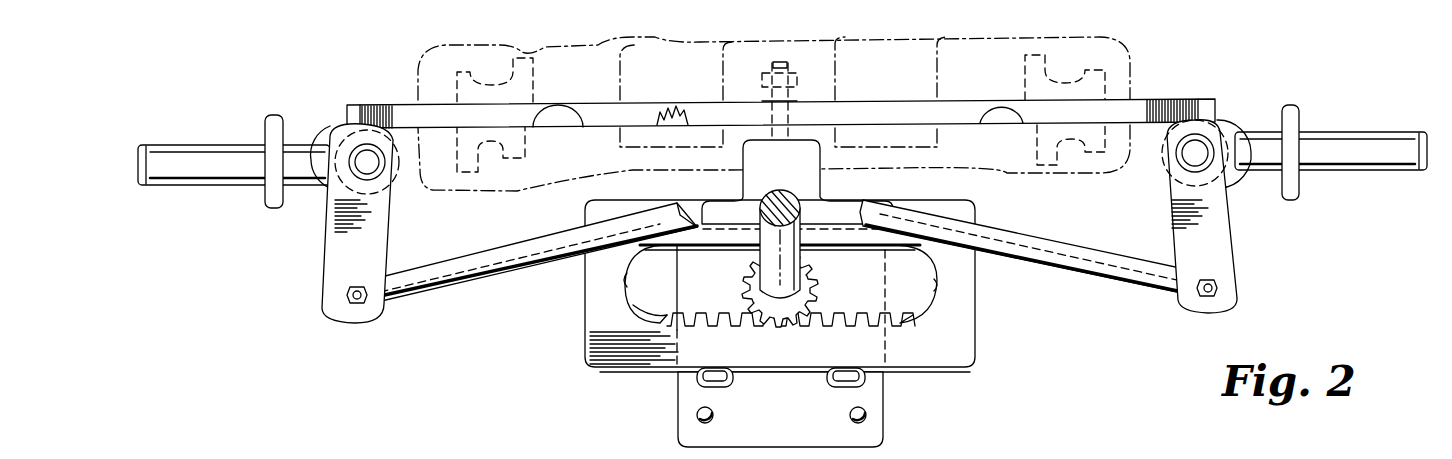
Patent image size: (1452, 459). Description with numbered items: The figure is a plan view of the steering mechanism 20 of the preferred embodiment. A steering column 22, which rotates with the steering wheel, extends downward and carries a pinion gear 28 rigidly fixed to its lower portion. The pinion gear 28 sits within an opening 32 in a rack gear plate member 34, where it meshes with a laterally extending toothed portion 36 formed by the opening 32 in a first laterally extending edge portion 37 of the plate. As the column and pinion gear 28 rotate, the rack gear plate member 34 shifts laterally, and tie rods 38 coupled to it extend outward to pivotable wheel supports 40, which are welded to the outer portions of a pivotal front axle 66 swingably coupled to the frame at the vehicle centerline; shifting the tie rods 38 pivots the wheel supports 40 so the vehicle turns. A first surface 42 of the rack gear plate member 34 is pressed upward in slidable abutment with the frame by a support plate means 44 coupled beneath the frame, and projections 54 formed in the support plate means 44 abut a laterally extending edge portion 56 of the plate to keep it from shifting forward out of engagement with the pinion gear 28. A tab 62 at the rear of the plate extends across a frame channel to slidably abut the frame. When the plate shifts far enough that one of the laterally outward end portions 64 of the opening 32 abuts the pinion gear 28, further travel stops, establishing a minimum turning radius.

The steering mechanism 20 is at (510, 348).
The steering column 22 is at (737, 217).
The pinion gear 28 is at (745, 283).
The opening 32 is at (905, 267).
The rack gear plate member 34 is at (977, 347).
The toothed portion 36 is at (893, 298).
The first laterally extending edge portion 37 is at (627, 300).
The tie rods 38 is at (502, 243).
The pivotable wheel supports 40 is at (401, 185).
The first surface 42 is at (933, 360).
The support plate means 44 is at (678, 413).
The projections 54 is at (828, 388).
The laterally extending edge portion 56 is at (610, 370).
The tab 62 is at (823, 160).
The laterally outward end portions 64 is at (630, 293).
The pivotal front axle 66 is at (1138, 100).